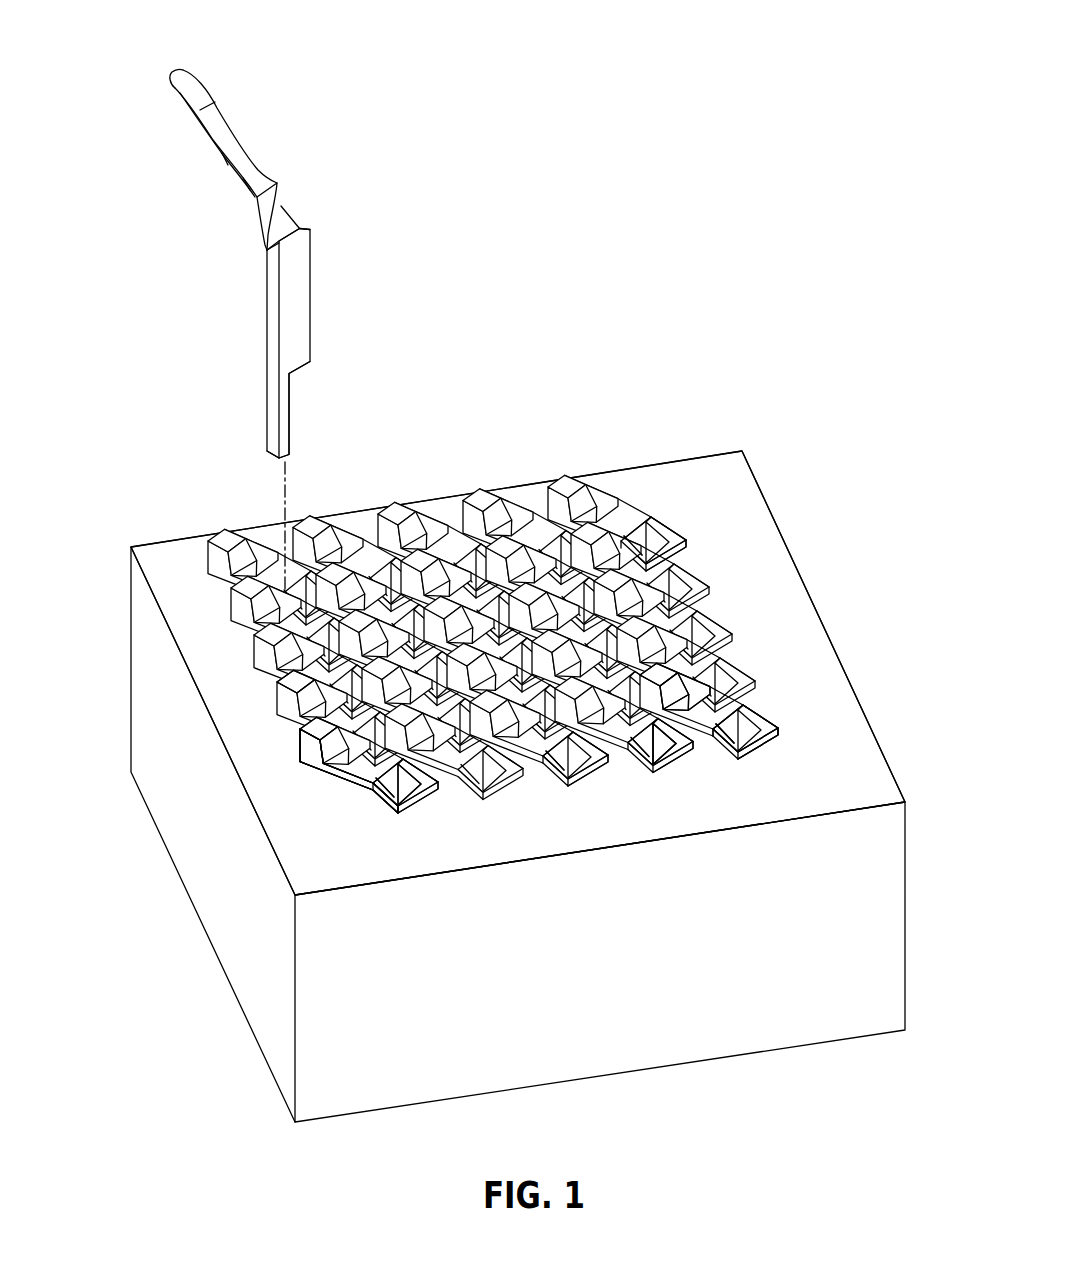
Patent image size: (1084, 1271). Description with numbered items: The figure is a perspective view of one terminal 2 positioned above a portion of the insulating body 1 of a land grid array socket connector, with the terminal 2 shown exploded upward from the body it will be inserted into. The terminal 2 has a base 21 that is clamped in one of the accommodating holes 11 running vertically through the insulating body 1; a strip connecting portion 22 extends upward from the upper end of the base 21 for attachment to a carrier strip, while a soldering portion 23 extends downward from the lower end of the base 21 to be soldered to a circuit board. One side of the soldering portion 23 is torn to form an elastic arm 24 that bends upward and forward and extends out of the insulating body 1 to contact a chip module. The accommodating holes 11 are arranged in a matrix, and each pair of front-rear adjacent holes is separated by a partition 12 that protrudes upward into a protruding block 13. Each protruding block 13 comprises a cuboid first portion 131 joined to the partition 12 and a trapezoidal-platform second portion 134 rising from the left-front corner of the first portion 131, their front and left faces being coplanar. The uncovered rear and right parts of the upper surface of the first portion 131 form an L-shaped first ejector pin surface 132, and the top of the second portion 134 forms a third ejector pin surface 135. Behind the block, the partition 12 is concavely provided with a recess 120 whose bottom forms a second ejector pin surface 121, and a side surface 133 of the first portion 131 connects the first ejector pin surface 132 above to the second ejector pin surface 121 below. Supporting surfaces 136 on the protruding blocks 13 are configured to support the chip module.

The insulating body 1 is at (740, 436).
The accommodating hole 11 is at (763, 718).
The partition 12 is at (731, 720).
The recess 120 is at (725, 755).
The second ejector pin surface 121 is at (618, 517).
The protruding block 13 is at (374, 832).
The first portion 131 is at (357, 782).
The first ejector pin surface 132 is at (682, 708).
The side surface 133 is at (360, 798).
The second portion 134 is at (352, 768).
The third ejector pin surface 135 is at (661, 678).
The supporting surface 136 is at (302, 687).
The terminal 2 is at (267, 240).
The base 21 is at (300, 278).
The strip connecting portion 22 is at (299, 228).
The soldering portion 23 is at (283, 418).
The elastic arm 24 is at (200, 88).